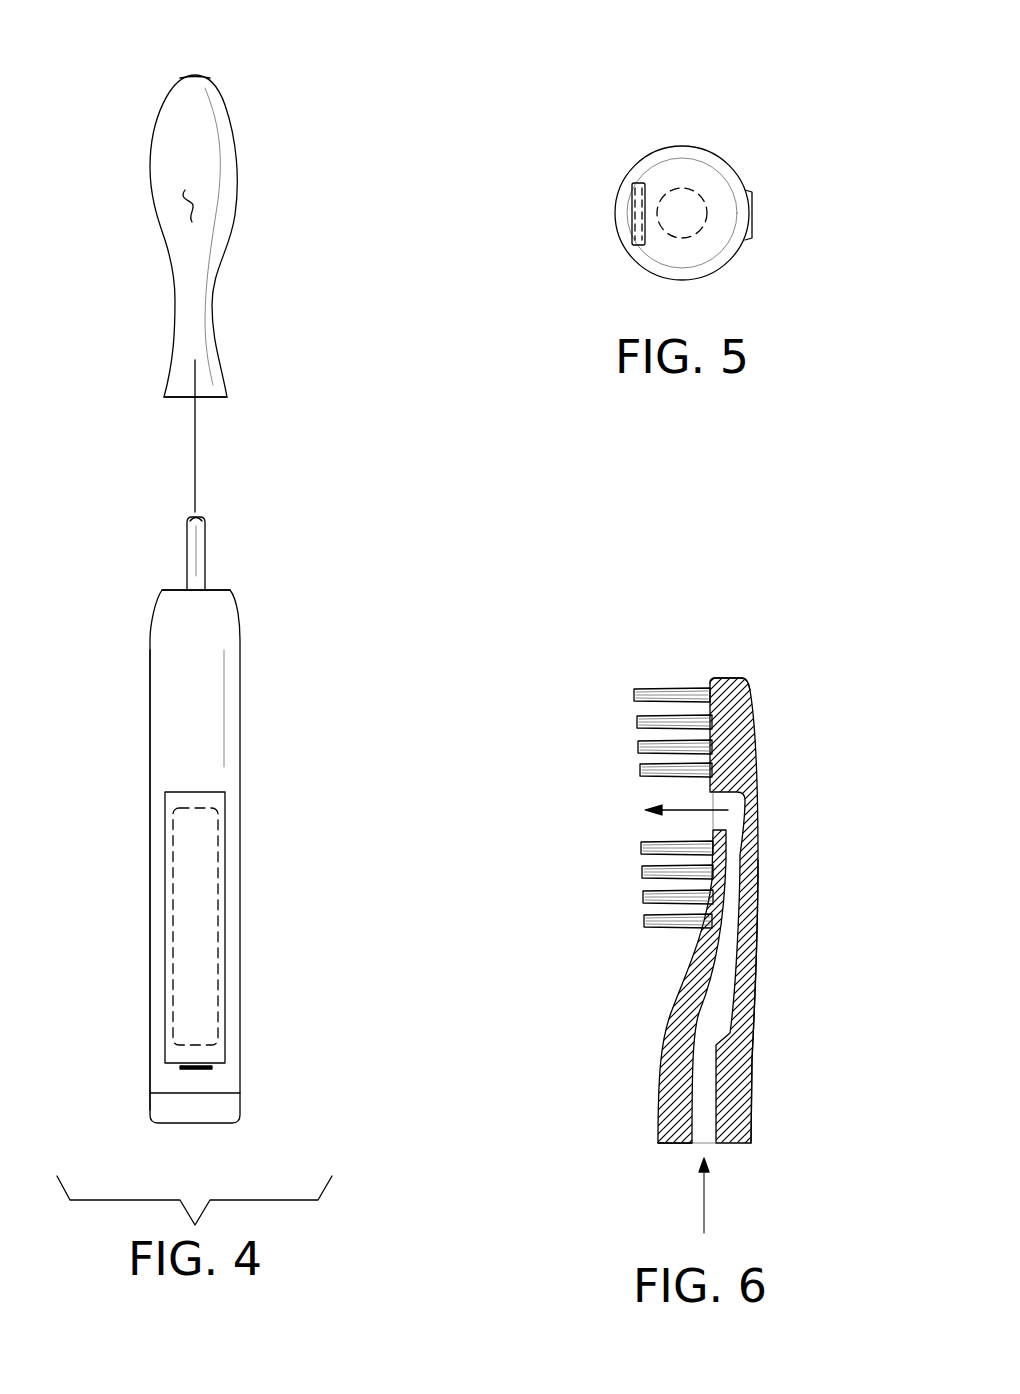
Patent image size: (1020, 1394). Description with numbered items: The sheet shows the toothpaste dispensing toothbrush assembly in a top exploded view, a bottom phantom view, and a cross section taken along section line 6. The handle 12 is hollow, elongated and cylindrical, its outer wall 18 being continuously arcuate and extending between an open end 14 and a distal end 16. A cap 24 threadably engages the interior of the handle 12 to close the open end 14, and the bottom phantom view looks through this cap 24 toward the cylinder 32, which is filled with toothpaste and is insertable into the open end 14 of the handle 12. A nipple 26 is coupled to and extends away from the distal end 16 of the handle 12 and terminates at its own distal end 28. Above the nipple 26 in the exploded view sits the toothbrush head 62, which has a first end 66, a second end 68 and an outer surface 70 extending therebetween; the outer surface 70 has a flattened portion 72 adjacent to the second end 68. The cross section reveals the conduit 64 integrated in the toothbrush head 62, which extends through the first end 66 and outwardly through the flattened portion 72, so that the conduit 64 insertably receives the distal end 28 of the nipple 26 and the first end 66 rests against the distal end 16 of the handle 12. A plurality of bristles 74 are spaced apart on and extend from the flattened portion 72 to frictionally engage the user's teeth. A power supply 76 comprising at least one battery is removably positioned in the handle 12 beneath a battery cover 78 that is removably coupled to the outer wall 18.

In FIG. 4, the section line 6- 6 is at (195, 53).
In FIG. 4, the handle 12 is at (242, 680).
In FIG. 4, the open end 14 is at (205, 1095).
In FIG. 4, the distal end 16 is at (212, 588).
In FIG. 4, the outer wall 18 is at (172, 697).
In FIG. 5, the cap 24 is at (696, 170).
In FIG. 4, the nipple 26 is at (186, 558).
In FIG. 4, the distal end 28 is at (200, 515).
In FIG. 5, the cylinder 32 is at (682, 238).
In FIG. 4, the toothbrush head 62 is at (232, 245).
In FIG. 6, the toothbrush head 62 is at (765, 772).
In FIG. 6, the conduit 64 is at (708, 1146).
In FIG. 4, the first end 66 is at (180, 397).
In FIG. 6, the first end 66 is at (677, 1146).
In FIG. 4, the second end 68 is at (205, 82).
In FIG. 6, the second end 68 is at (738, 677).
In FIG. 4, the outer surface 70 is at (182, 206).
In FIG. 6, the outer surface 70 is at (757, 938).
In FIG. 6, the flattened portion 72 is at (710, 905).
In FIG. 6, the bristles 74 is at (641, 848).
In FIG. 4, the power supply 76 is at (218, 886).
In FIG. 5, the power supply 76 is at (632, 195).
In FIG. 4, the battery cover 78 is at (165, 835).